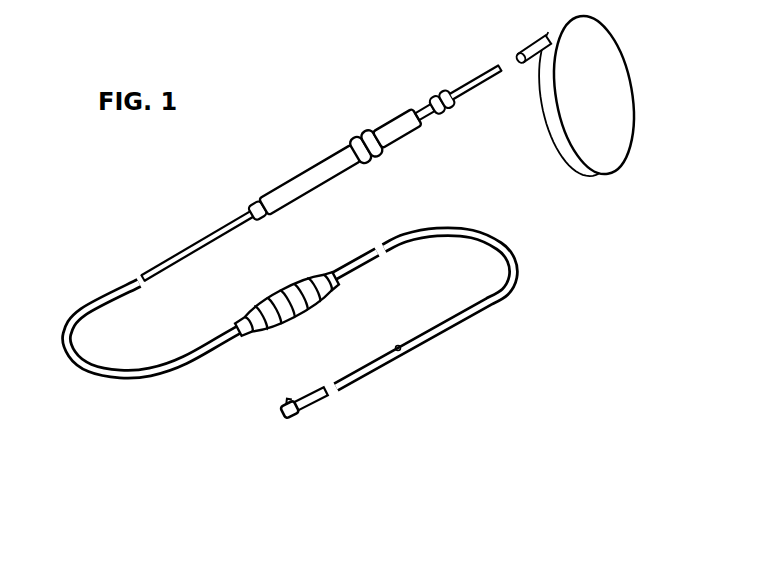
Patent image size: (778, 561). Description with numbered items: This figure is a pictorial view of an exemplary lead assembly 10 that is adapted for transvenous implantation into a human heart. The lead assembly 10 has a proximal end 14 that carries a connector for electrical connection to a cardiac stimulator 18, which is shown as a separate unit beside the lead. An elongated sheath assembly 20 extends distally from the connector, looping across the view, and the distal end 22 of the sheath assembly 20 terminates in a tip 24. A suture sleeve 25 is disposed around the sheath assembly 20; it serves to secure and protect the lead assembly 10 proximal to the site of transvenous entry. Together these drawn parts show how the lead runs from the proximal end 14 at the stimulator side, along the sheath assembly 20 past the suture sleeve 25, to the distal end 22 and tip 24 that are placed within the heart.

The lead assembly 10 is at (112, 240).
The proximal end 14 is at (318, 161).
The cardiac stimulator 18 is at (634, 106).
The sheath assembly 20 is at (68, 346).
The distal end 22 is at (361, 393).
The tip 24 is at (306, 405).
The suture sleeve 25 is at (272, 325).